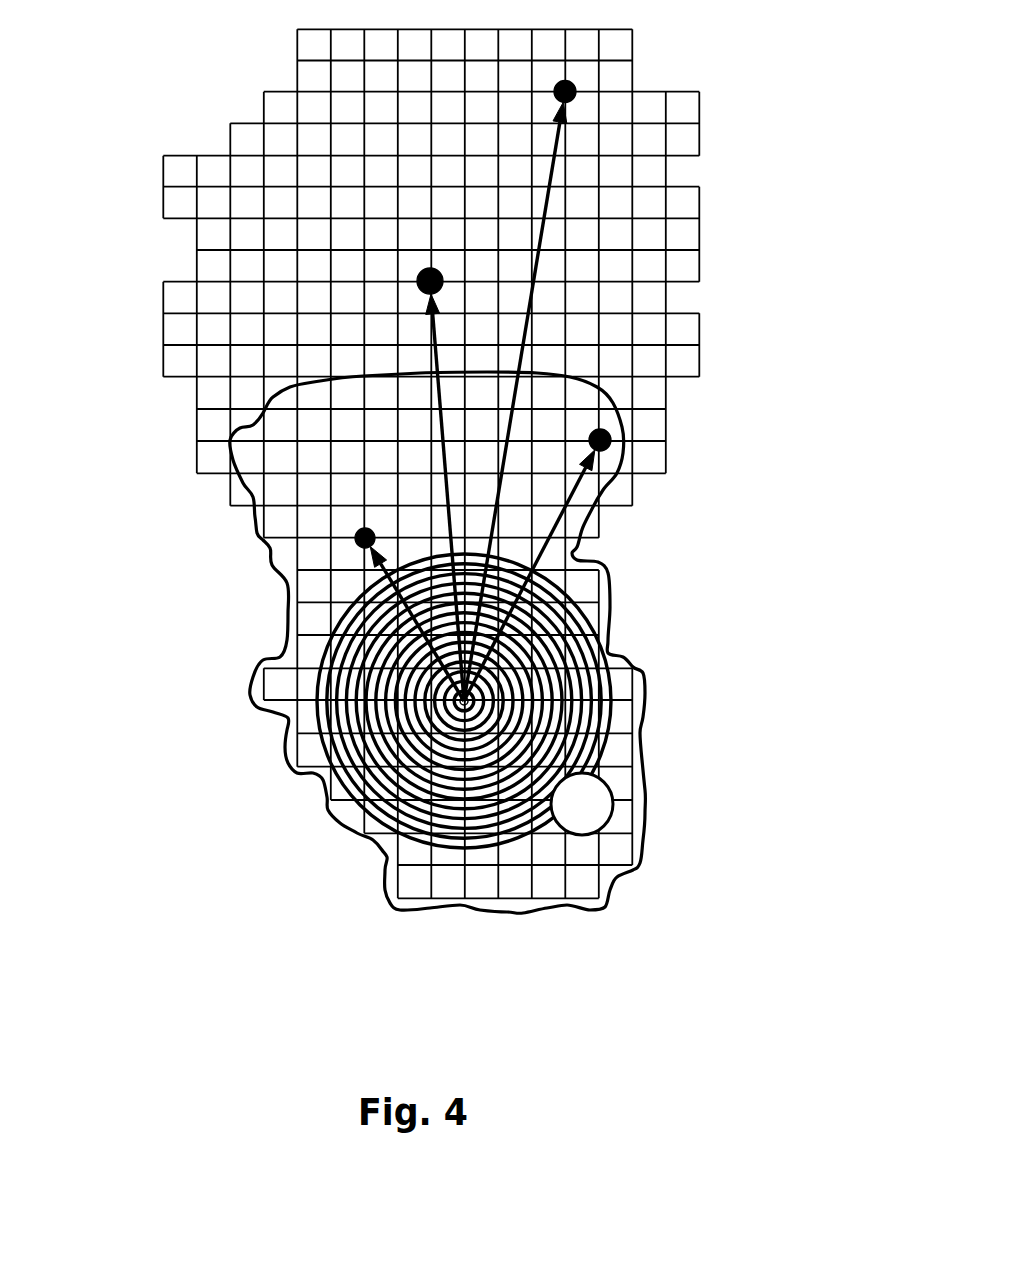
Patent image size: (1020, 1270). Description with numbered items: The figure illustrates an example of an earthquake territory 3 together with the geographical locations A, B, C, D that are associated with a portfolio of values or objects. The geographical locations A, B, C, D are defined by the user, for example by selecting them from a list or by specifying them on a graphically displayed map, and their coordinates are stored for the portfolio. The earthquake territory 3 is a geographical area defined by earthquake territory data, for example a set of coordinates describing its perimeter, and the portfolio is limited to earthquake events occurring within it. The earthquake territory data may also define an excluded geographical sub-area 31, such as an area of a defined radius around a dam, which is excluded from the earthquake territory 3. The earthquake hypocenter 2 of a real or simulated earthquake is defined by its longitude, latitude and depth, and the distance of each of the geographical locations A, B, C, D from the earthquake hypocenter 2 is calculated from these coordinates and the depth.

The earthquake hypocenter 2 is at (460, 701).
The earthquake territory 3 is at (386, 847).
The excluded geographical sub-area 31 is at (602, 803).
The geographical location A is at (357, 540).
The geographical location B is at (420, 282).
The geographical location C is at (576, 86).
The geographical location D is at (609, 438).